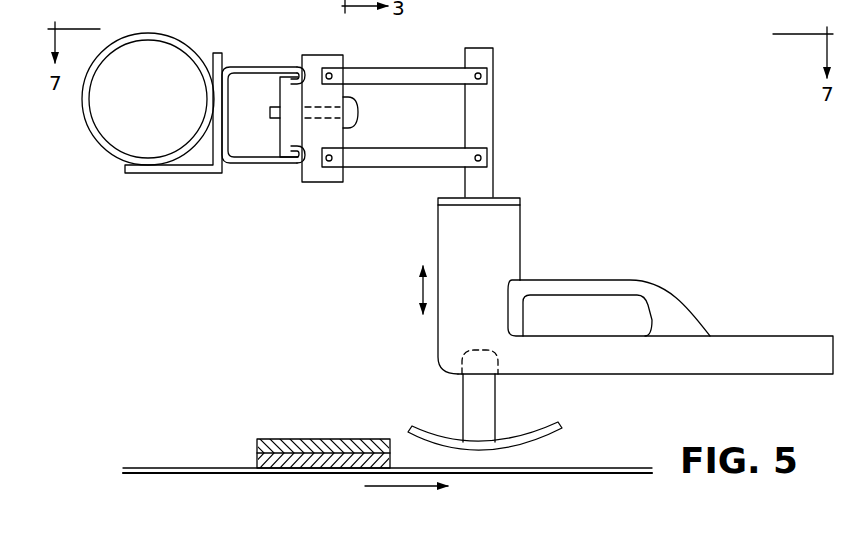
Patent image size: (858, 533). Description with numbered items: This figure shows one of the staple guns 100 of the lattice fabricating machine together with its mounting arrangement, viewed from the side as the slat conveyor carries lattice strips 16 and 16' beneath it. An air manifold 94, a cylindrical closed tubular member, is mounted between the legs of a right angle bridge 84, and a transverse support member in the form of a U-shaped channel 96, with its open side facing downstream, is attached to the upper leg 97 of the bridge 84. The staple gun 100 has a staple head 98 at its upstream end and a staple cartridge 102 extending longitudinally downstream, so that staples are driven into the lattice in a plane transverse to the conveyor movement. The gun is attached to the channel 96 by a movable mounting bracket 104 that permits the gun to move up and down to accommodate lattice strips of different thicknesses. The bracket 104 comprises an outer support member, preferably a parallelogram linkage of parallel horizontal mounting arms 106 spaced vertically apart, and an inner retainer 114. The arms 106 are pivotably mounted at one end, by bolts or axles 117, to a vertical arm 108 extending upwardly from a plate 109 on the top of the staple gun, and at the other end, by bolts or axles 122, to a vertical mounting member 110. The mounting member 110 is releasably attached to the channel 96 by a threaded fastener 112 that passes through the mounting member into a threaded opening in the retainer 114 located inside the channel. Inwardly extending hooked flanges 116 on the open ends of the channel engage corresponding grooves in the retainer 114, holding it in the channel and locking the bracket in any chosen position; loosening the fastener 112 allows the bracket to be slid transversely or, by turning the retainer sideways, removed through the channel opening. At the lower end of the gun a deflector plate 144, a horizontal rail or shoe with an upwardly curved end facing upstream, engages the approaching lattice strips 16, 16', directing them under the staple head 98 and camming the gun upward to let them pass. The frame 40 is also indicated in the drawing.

The lattice strips 16 is at (290, 449).
The lattice strips 16' is at (260, 416).
The frame 40 is at (308, 6).
The right angle bridge 84 is at (223, 49).
The air manifold 94 is at (160, 38).
The U-shaped channel 96 is at (250, 165).
The upper leg 97 is at (222, 65).
The staple heads 98 is at (507, 235).
The staple guns 100 is at (436, 240).
The staple cartridges 102 is at (752, 345).
The movable mounting bracket 104 is at (428, 59).
The horizontal mounting arms 106 is at (460, 75).
The vertical arm 108 is at (487, 110).
The plate 109 is at (513, 193).
The vertical mounting member 110 is at (317, 62).
The threaded fastener 112 is at (357, 113).
The inner retainer 114 is at (281, 135).
The hooked flanges 116 is at (297, 68).
The bolts or axles 117 is at (483, 75).
The bolts or axles 122 is at (331, 75).
The deflector plate 144 is at (420, 431).